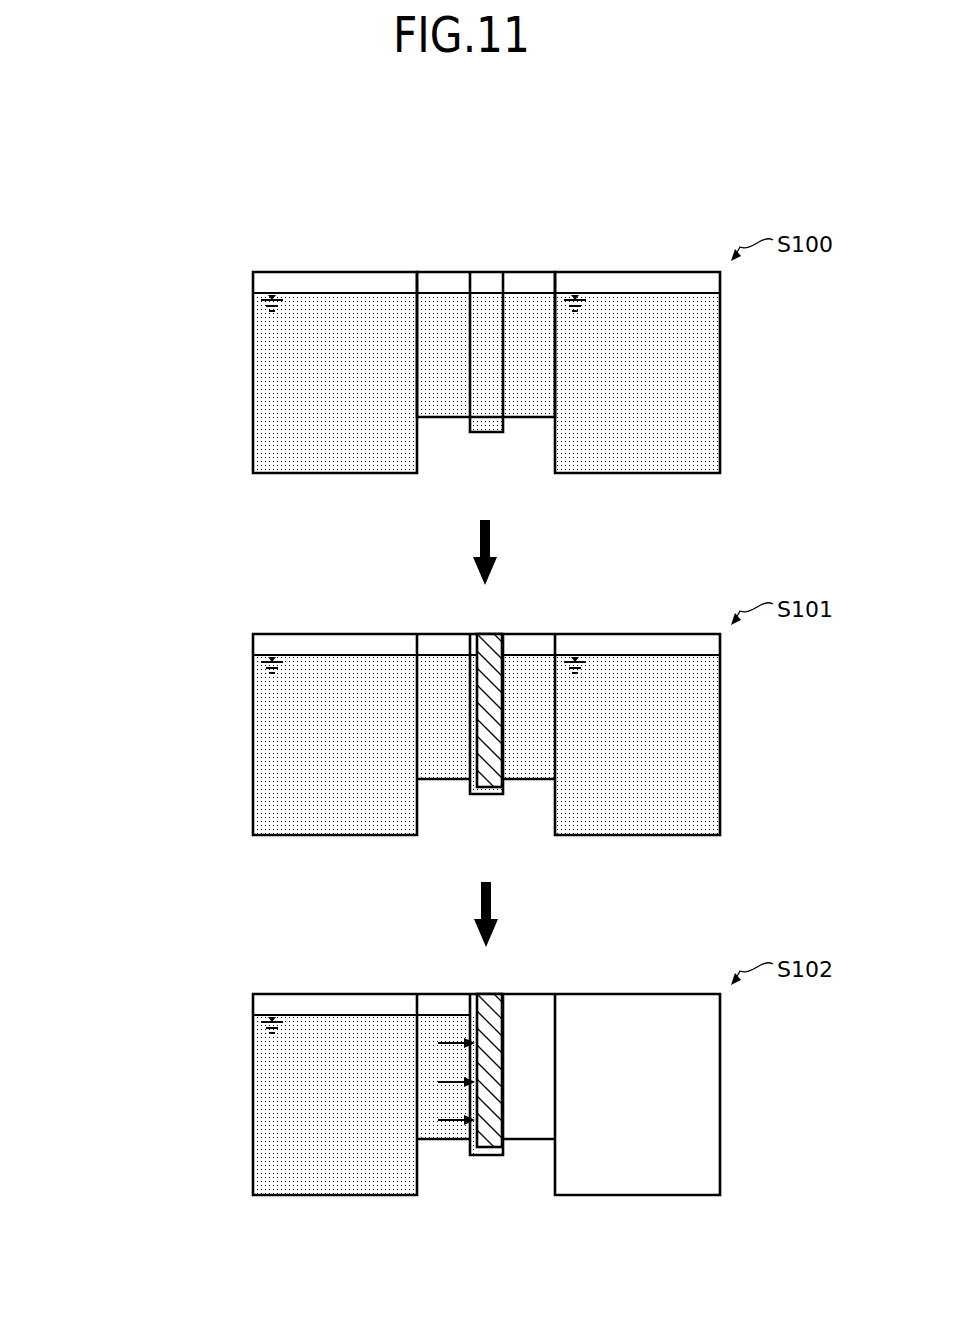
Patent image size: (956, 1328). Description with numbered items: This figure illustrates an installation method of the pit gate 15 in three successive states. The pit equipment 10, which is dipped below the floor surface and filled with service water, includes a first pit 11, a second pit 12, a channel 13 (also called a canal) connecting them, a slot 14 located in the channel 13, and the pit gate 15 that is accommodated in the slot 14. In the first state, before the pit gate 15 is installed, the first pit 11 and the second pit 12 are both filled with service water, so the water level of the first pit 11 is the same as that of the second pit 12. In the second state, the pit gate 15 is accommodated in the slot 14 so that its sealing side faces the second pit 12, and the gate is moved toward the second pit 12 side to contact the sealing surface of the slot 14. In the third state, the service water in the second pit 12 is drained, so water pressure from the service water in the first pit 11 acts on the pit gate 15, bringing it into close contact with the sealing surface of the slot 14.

The pit equipment 10 is at (378, 311).
The first pit 11 is at (321, 272).
The second pit 12 is at (637, 311).
The channel 13 is at (433, 272).
The slot 14 is at (485, 283).
The pit gate 15 is at (487, 635).